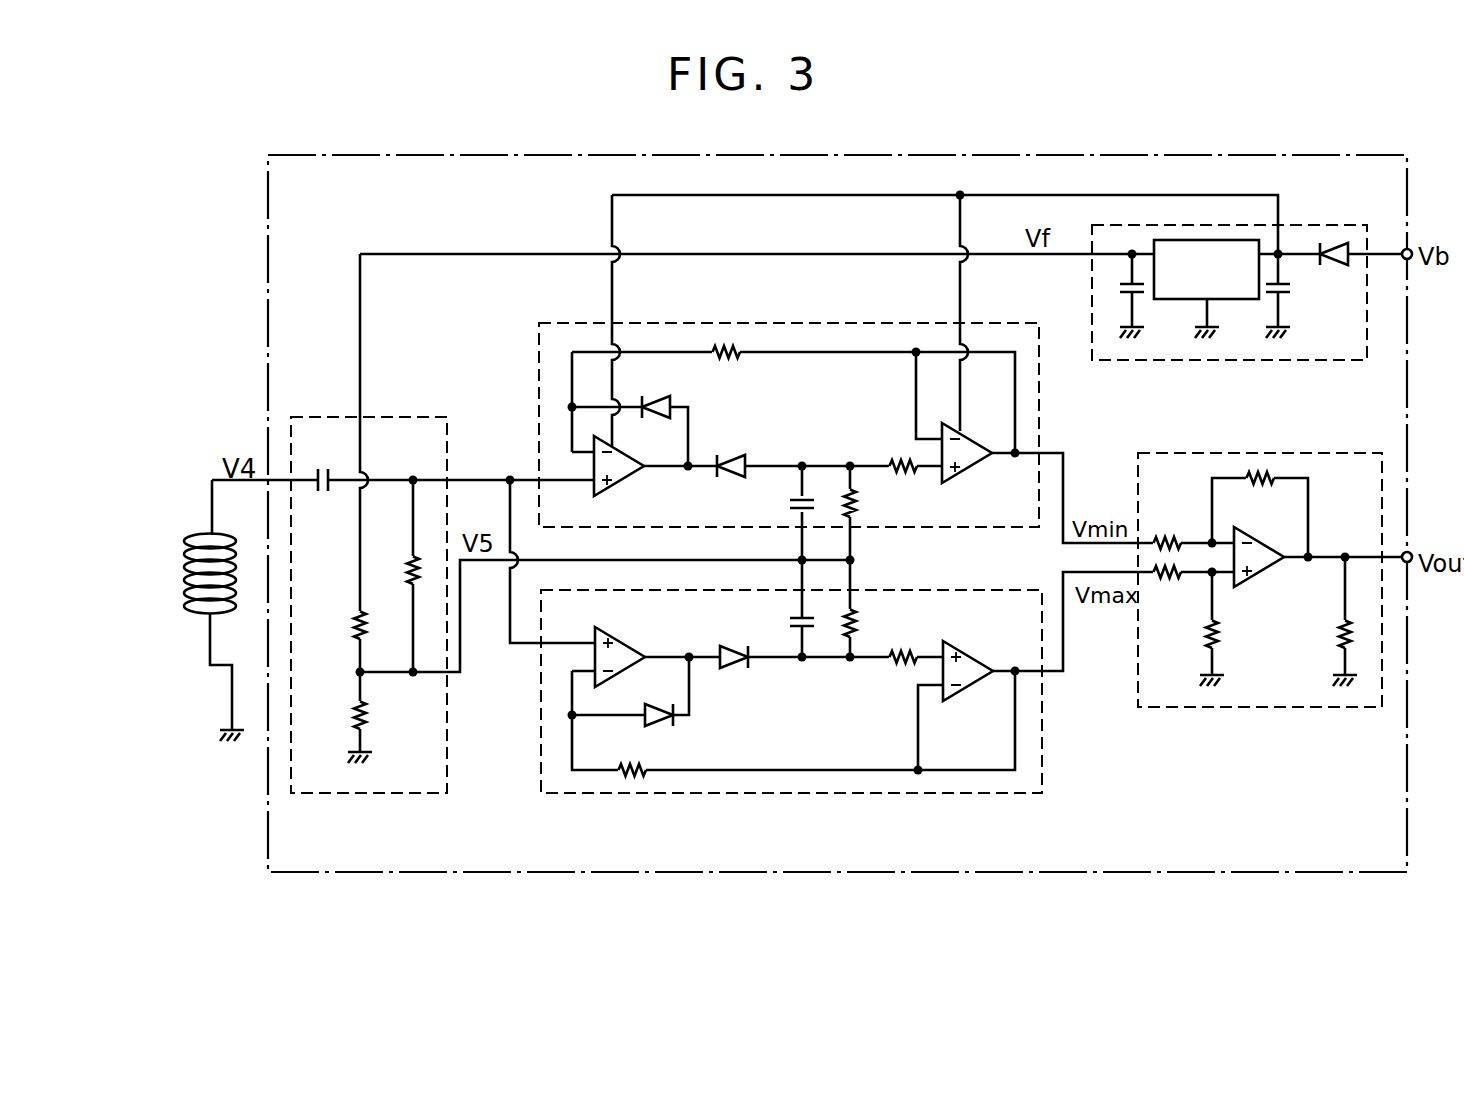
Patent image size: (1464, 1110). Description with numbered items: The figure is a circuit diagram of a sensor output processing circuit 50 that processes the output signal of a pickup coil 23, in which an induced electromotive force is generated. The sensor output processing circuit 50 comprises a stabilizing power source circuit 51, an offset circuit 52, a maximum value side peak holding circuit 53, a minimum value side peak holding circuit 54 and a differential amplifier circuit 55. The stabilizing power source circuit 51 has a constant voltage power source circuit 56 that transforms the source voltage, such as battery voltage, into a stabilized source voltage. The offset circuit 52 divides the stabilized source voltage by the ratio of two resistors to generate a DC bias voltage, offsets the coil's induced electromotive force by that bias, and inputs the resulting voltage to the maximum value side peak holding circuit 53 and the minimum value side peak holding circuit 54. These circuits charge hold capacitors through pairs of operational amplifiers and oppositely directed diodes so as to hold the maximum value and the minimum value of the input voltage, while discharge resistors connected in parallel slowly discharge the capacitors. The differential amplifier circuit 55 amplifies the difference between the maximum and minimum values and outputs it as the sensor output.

The pickup coil 23 is at (168, 538).
The sensor output processing circuit 50 is at (1312, 155).
The stabilizing power source circuit 51 is at (1246, 235).
The offset circuit 52 is at (408, 417).
The maximum value side peak holding circuit 53 is at (1043, 771).
The minimum value side peak holding circuit 54 is at (565, 322).
The differential amplifier circuit 55 is at (1321, 453).
The constant voltage power source circuit 56 is at (1207, 240).